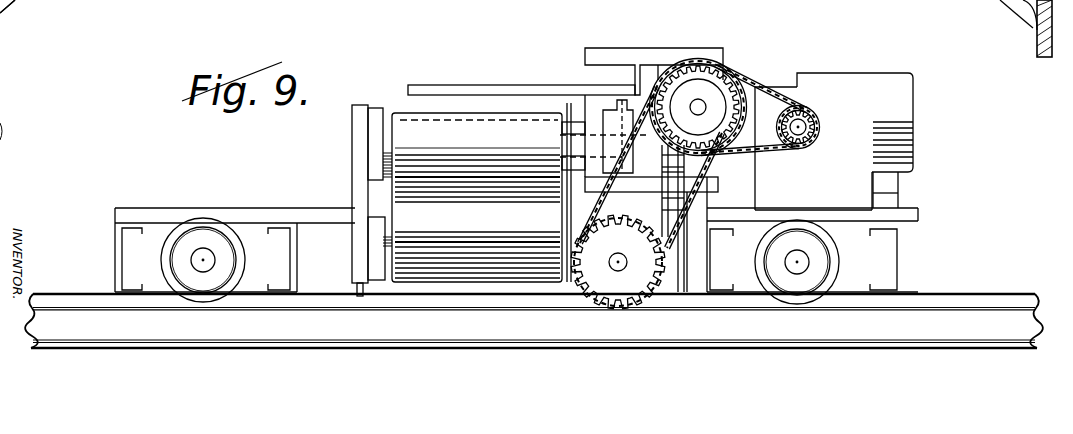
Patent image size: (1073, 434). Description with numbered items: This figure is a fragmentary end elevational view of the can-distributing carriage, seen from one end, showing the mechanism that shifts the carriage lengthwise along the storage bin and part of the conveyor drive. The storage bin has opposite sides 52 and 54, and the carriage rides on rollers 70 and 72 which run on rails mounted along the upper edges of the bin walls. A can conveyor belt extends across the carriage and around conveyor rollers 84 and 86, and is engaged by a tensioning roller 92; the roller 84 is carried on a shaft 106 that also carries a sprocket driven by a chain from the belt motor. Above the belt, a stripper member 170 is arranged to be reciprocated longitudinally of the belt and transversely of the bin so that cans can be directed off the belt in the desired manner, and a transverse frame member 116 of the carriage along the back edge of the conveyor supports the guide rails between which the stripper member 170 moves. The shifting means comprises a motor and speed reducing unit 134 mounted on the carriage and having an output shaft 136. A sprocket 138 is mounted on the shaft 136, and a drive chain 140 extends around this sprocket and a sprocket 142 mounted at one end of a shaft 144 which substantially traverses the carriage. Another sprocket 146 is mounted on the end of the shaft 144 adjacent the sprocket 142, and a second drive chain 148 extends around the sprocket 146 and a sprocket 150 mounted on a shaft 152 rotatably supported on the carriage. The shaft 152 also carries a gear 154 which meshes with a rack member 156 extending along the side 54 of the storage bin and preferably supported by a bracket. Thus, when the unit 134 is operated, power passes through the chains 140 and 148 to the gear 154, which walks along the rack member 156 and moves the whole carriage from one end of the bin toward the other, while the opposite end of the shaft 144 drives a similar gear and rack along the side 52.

The side of storage bin 52 is at (0, 43).
The side of storage bin 54 is at (1027, 4).
The roller 70 is at (204, 250).
The roller 72 is at (808, 250).
The conveyor roller 84 is at (408, 123).
The conveyor roller 86 is at (412, 281).
The tensioning roller 92 is at (412, 222).
The shaft 106 is at (565, 153).
The transverse frame member 116 is at (640, 27).
The motor and speed reducing unit 134 is at (913, 97).
The output shaft 136 is at (808, 127).
The sprocket 138 is at (812, 140).
The drive chain 140 is at (768, 86).
The sprocket 142 is at (748, 80).
The shaft 144 is at (703, 100).
The sprocket 146 is at (705, 150).
The drive chain 148 is at (600, 252).
The sprocket 150 is at (565, 238).
The shaft 152 is at (562, 257).
The gear 154 is at (575, 290).
The rack member 156 is at (970, 303).
The stripper member 170 is at (545, 57).